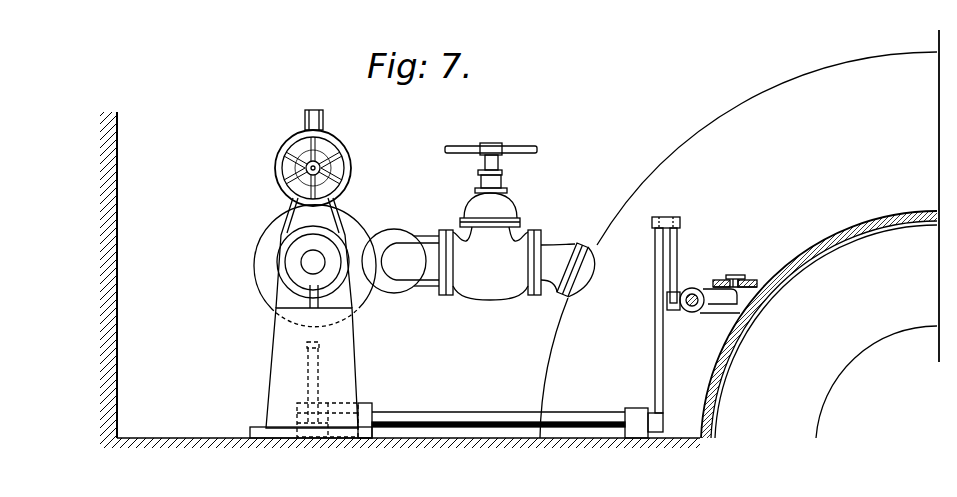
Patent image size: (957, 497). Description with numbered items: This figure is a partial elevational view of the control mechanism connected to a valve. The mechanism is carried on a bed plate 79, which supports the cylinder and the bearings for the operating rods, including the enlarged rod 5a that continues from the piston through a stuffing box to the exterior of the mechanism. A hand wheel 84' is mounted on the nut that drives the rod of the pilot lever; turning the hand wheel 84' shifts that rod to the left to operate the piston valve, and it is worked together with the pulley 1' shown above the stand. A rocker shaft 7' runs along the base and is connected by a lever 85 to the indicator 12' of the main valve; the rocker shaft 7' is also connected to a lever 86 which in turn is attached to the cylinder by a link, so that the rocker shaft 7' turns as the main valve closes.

The hand wheel 84' is at (339, 158).
The pulley 1' is at (293, 266).
The rod 5a is at (313, 262).
The bed plate 79 is at (280, 360).
The lever 86 is at (320, 353).
The rocker shaft 7' is at (517, 404).
The lever 85 is at (657, 352).
The indicator 12' is at (723, 270).